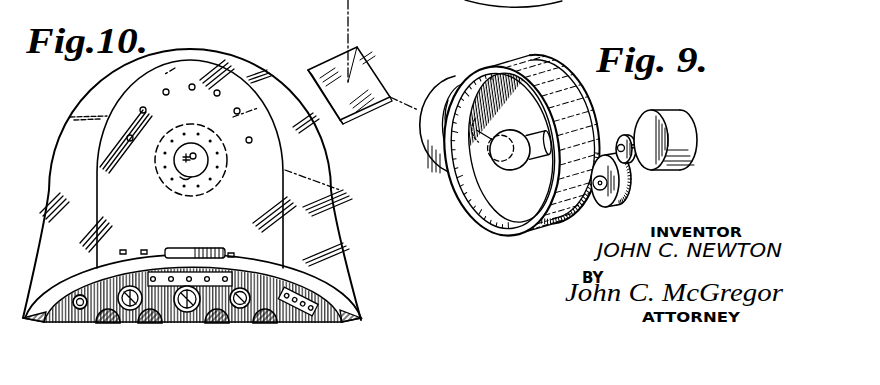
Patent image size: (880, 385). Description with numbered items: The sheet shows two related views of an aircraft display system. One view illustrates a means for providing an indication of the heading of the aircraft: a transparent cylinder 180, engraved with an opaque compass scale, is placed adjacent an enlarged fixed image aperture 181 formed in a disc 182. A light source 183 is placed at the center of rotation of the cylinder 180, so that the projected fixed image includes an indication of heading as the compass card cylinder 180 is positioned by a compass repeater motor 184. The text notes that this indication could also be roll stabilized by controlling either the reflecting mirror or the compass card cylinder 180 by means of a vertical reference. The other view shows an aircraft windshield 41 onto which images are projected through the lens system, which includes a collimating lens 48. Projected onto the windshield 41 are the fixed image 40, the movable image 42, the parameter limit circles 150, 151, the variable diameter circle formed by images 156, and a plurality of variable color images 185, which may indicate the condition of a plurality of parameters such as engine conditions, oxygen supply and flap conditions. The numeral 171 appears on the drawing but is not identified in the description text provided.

In FIG. 10, the fixed image 40 is at (207, 167).
In FIG. 10, the aircraft windshield 41 is at (117, 199).
In FIG. 10, the movable image 42 is at (197, 155).
In FIG. 10, the collimating lens 48 is at (205, 244).
In FIG. 10, the parameter limit circle 150 is at (190, 126).
In FIG. 10, the parameter limit circle 151 is at (157, 158).
In FIG. 10, the images forming variable diameter circle 156 is at (180, 197).
In FIG. 10, the variable color images 185 is at (216, 90).
In FIG. 9, the compass card 171 is at (563, 3).
In FIG. 9, the transparent cylinder 180 is at (474, 224).
In FIG. 9, the fixed image aperture 181 is at (442, 125).
In FIG. 9, the disc 182 is at (435, 94).
In FIG. 9, the light source 183 is at (512, 173).
In FIG. 9, the compass repeater motor 184 is at (694, 162).